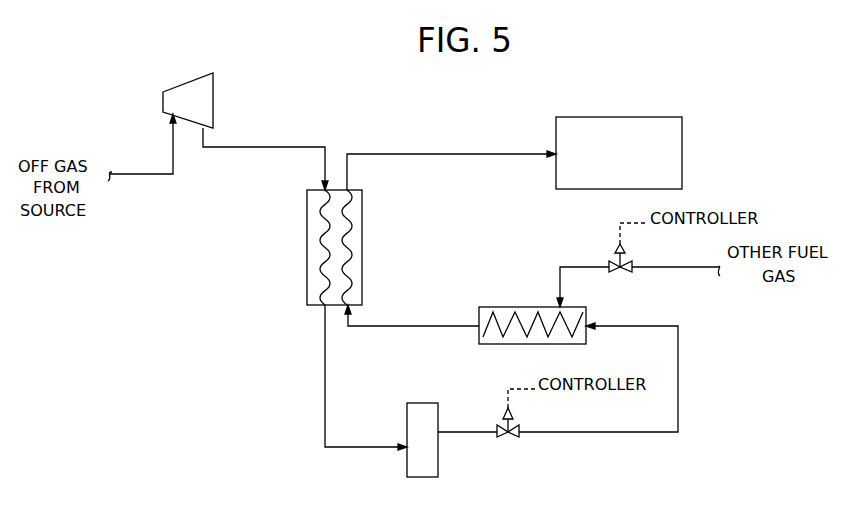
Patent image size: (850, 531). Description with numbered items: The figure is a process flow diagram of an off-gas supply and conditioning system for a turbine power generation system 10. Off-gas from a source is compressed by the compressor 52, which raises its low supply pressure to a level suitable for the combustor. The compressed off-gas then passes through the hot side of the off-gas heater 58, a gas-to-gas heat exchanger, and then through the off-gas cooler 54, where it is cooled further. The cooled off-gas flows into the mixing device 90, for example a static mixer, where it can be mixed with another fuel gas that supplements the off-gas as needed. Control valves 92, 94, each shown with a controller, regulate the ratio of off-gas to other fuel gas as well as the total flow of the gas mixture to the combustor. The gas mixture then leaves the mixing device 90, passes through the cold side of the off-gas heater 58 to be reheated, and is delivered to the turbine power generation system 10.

The turbine power generation system 10 is at (626, 113).
The off-gas compressor 52 is at (188, 82).
The off-gas cooler 54 is at (424, 402).
The off-gas heater 58 is at (307, 226).
The mixing device 90 is at (508, 306).
The control valve 92 is at (512, 440).
The control valve 94 is at (626, 275).